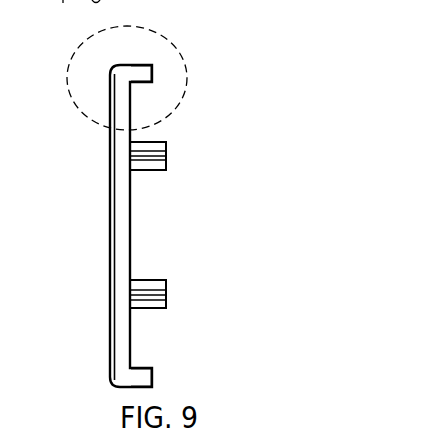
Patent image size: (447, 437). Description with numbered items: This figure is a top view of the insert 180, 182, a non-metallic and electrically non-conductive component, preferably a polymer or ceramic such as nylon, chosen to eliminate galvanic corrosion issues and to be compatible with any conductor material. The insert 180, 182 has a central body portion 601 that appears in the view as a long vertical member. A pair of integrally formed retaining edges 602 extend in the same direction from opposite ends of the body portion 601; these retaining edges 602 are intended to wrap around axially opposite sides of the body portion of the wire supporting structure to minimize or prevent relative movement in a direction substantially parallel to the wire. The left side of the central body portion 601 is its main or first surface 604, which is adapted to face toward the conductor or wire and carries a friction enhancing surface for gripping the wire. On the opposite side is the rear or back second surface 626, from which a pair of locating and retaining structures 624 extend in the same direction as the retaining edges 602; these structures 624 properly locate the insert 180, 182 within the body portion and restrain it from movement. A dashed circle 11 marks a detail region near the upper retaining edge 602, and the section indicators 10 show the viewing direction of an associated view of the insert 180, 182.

The section view direction indicator 10 is at (285, 88).
The detail region 11 is at (185, 89).
The insert 180 is at (196, 213).
The insert 182 is at (268, 175).
The central body portion 601 is at (124, 259).
The retaining edges 602 is at (140, 72).
The first surface 604 is at (110, 290).
The locating and retaining structures 624 is at (156, 153).
The second surface 626 is at (130, 184).